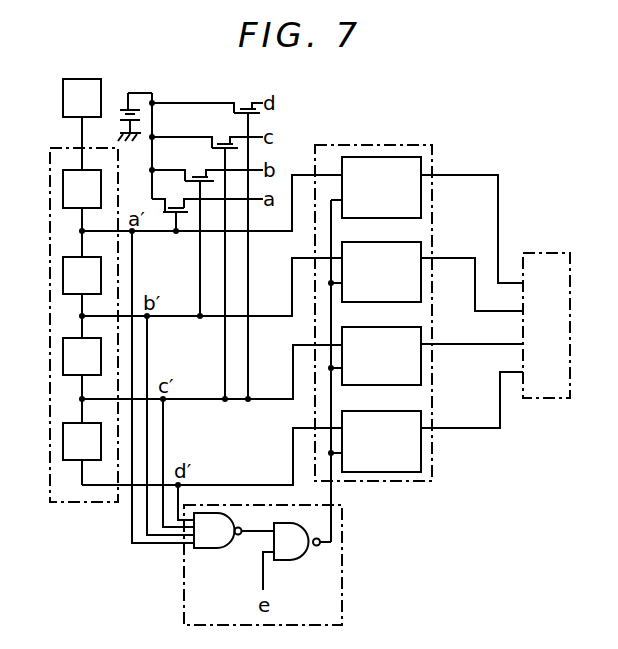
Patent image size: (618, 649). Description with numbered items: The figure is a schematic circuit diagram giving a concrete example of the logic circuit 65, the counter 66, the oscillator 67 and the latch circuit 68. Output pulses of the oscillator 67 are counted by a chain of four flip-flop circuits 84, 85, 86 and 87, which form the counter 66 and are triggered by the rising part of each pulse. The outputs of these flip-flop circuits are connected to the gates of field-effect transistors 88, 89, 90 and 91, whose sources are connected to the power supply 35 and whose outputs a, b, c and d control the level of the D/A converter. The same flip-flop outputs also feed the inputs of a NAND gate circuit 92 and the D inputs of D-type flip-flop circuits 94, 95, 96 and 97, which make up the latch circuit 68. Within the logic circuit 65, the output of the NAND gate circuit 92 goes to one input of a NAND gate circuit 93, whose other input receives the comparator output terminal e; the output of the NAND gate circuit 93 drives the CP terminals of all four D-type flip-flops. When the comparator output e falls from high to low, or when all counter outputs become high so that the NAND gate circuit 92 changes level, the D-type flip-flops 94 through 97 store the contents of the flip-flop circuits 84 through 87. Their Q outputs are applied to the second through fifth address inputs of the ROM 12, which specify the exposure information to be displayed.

The oscillator 67 is at (63, 100).
The counter 66 is at (50, 168).
The flip-flop circuit 84 is at (82, 189).
The flip-flop circuit 85 is at (82, 275).
The flip-flop circuit 86 is at (82, 356).
The flip-flop circuit 87 is at (82, 441).
The power supply 35 is at (119, 111).
The field-effect transistor 88 is at (207, 203).
The field-effect transistor 89 is at (207, 232).
The field-effect transistor 90 is at (207, 256).
The field-effect transistor 91 is at (207, 244).
The latch circuit 68 is at (422, 146).
The D-type flip-flop circuit 94 is at (415, 210).
The D-type flip-flop circuit 95 is at (415, 295).
The D-type flip-flop circuit 96 is at (415, 380).
The D-type flip-flop circuit 97 is at (415, 465).
The ROM 12 is at (562, 253).
The logic circuit 65 is at (184, 583).
The NAND gate circuit 92 is at (218, 530).
The NAND gate circuit 93 is at (297, 541).